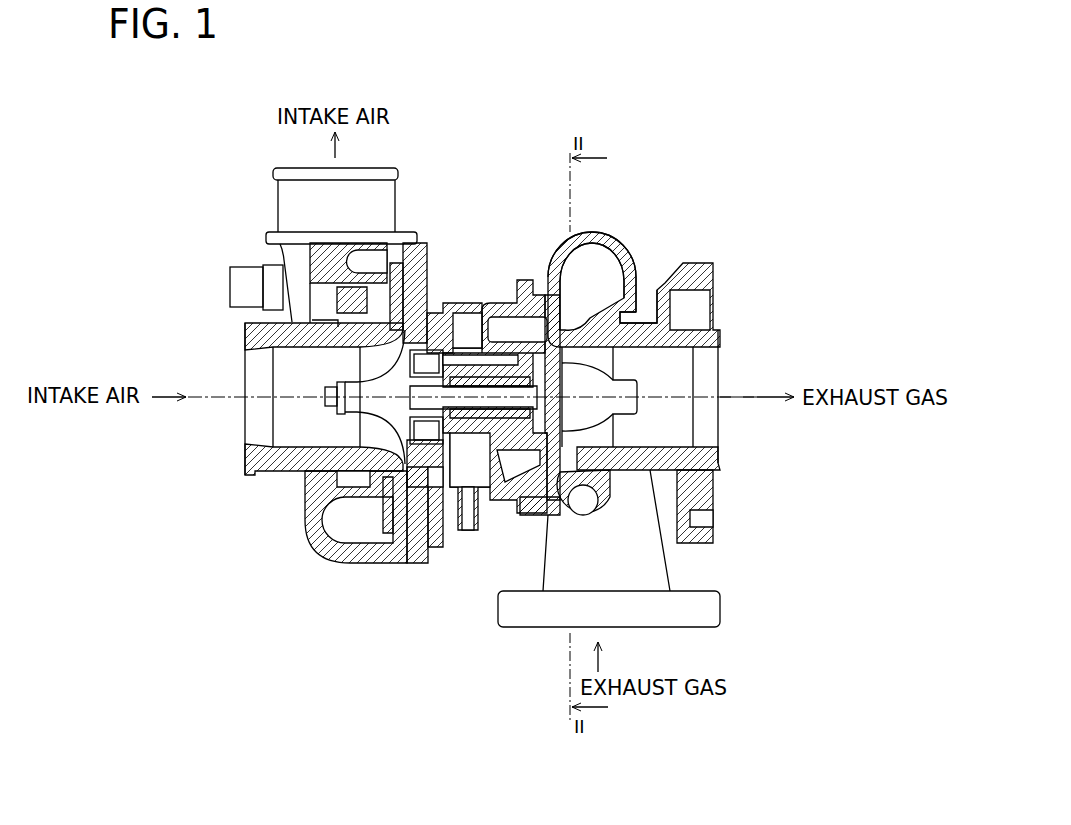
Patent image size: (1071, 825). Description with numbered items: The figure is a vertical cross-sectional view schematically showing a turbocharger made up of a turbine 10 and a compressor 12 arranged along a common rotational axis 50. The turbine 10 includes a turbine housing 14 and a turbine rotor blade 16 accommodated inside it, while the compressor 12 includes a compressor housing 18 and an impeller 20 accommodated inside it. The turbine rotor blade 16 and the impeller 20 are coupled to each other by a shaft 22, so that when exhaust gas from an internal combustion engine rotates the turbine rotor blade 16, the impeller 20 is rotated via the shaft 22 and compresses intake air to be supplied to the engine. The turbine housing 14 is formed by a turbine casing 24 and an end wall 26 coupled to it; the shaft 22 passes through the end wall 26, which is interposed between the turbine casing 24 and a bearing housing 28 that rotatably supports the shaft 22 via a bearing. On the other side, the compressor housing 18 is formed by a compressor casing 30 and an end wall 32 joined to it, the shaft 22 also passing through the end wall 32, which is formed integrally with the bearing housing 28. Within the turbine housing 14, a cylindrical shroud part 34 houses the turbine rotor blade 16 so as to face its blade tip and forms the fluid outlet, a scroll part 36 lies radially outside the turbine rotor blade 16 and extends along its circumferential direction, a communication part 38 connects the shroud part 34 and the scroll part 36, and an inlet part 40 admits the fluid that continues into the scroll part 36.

The turbine 10 is at (693, 222).
The compressor 12 is at (248, 222).
The turbine housing 14 is at (632, 250).
The turbine rotor blade 16 is at (630, 378).
The compressor housing 18 is at (240, 318).
The impeller 20 is at (350, 378).
The shaft 22 is at (481, 420).
The turbine casing 24 is at (610, 234).
The end wall 26 is at (541, 333).
The bearing housing 28 is at (488, 295).
The compressor casing 30 is at (243, 355).
The end wall 32 is at (430, 280).
The shroud part 34 is at (643, 320).
The scroll part 36 is at (590, 232).
The communication part 38 is at (548, 310).
The inlet part 40 is at (672, 568).
The rotational axis 50 is at (731, 392).